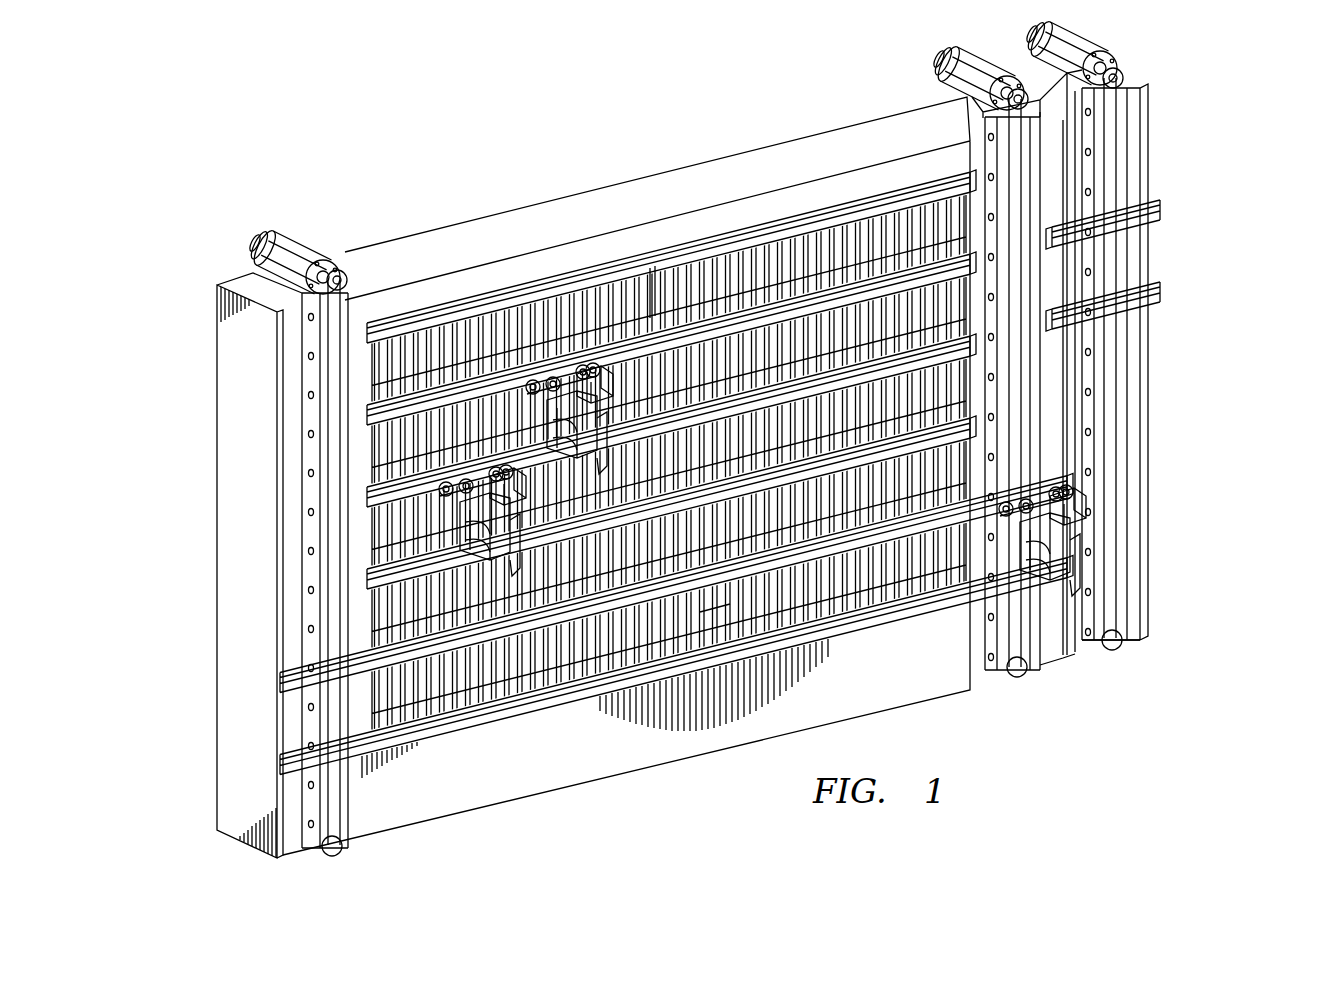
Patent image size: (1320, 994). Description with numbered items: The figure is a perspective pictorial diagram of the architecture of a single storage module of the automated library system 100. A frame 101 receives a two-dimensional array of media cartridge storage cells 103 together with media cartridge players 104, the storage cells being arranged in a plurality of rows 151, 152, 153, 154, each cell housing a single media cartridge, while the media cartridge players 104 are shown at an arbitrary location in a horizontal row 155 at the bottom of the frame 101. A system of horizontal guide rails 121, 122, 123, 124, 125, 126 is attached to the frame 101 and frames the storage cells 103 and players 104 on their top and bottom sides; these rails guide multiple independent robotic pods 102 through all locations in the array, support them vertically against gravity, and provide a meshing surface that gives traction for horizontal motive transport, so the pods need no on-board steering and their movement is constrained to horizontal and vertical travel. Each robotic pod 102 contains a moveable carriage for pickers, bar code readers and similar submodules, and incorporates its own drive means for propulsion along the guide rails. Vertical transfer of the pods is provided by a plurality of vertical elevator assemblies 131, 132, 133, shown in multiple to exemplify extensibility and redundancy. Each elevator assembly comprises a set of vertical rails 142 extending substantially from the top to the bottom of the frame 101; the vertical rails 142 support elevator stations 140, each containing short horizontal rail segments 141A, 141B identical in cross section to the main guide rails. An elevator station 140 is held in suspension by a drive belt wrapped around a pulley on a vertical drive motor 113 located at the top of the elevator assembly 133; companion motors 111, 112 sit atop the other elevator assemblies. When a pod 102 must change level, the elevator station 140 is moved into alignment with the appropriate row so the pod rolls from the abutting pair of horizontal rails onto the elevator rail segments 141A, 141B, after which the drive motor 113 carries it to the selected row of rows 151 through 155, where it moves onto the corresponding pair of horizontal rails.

The automated library system 100 is at (411, 160).
The frame 101 is at (548, 210).
The robotic pod 102 is at (1096, 522).
The media cartridge storage cell 103 is at (655, 300).
The media cartridge player 104 is at (715, 632).
The drive motor 111 is at (300, 252).
The drive motor 112 is at (930, 76).
The vertical drive motor 113 is at (1090, 50).
The horizontal guide rail 121 is at (365, 324).
The horizontal guide rail 122 is at (372, 415).
The horizontal guide rail 123 is at (372, 497).
The horizontal guide rail 124 is at (372, 579).
The horizontal guide rail 125 is at (283, 674).
The horizontal guide rail 126 is at (283, 758).
The vertical elevator assembly 131 is at (360, 853).
The vertical elevator assembly 132 is at (992, 690).
The vertical elevator assembly 133 is at (1092, 668).
The elevator station 140 is at (1225, 225).
The horizontal rail segment 141A is at (1160, 208).
The horizontal rail segment 141B is at (1162, 290).
The vertical rail 142 is at (1140, 410).
The row of media cartridge storage cells 151 is at (355, 385).
The row of media cartridge storage cells 152 is at (355, 466).
The row of media cartridge storage cells 153 is at (355, 546).
The row of media cartridge storage cells 154 is at (355, 626).
The horizontal row 155 is at (355, 706).